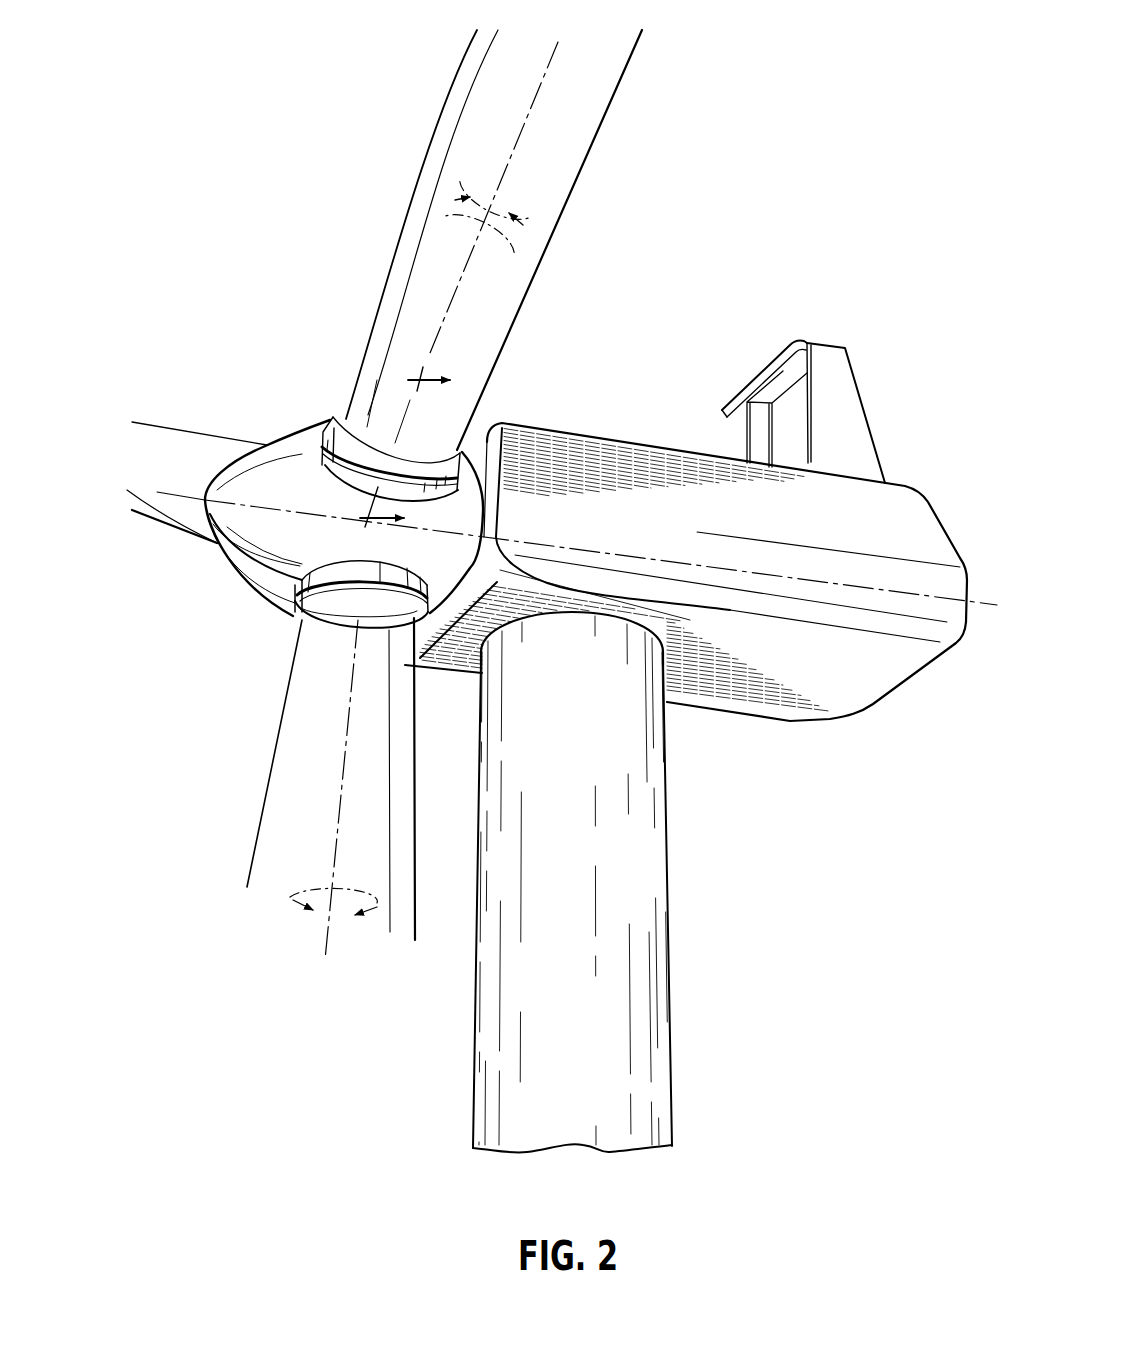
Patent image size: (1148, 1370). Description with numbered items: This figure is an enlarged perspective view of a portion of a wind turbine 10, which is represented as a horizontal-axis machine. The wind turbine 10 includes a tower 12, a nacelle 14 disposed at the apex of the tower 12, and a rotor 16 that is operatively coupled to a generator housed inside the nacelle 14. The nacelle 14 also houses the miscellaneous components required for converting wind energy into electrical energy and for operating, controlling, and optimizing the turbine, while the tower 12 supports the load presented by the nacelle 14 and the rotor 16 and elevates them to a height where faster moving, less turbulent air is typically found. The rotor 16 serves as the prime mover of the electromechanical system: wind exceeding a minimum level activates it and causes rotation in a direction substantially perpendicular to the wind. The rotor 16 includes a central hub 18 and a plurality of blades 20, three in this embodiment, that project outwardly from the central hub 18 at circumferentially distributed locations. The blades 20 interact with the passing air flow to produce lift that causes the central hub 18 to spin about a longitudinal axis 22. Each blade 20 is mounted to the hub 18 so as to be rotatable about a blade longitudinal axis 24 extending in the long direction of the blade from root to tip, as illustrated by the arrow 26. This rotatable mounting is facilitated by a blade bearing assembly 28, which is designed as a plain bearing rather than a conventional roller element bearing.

The wind turbine 10 is at (218, 102).
The tower 12 is at (672, 878).
The nacelle 14 is at (917, 484).
The rotor 16 is at (233, 577).
The central hub 18 is at (267, 445).
The blades 20 is at (597, 133).
The longitudinal axis 22 is at (623, 549).
The blade longitudinal axis 24 is at (463, 273).
The arrow 26 is at (447, 212).
The blade bearing assembly 28 is at (331, 416).